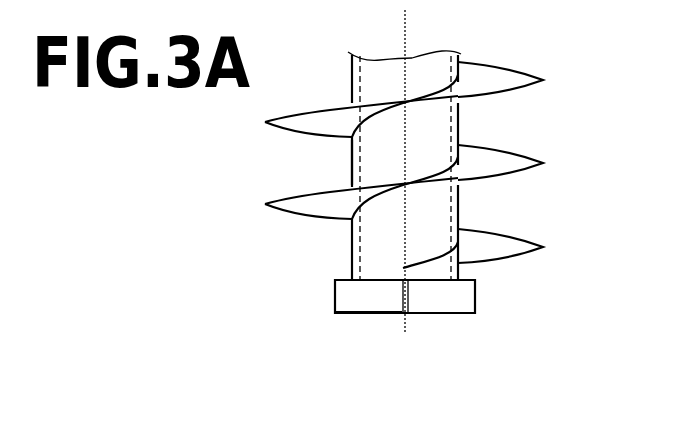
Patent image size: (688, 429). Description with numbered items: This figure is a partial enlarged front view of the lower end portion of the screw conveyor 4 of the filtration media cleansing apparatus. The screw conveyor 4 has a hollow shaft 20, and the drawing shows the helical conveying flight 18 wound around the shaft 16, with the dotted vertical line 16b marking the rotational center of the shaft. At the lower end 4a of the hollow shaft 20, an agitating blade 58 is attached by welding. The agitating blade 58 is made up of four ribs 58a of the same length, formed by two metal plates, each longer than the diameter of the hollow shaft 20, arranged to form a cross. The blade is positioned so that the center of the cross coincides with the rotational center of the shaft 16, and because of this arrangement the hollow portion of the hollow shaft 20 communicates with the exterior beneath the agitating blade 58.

The screw conveyor 4 is at (443, 171).
The lower end 4a is at (440, 282).
The shaft 16 is at (461, 120).
The axis of shaft 16b is at (405, 38).
The helical blade 18 is at (545, 80).
The hollow shaft 20 is at (351, 162).
The agitating blade 58 is at (440, 326).
The ribs 58a is at (370, 310).